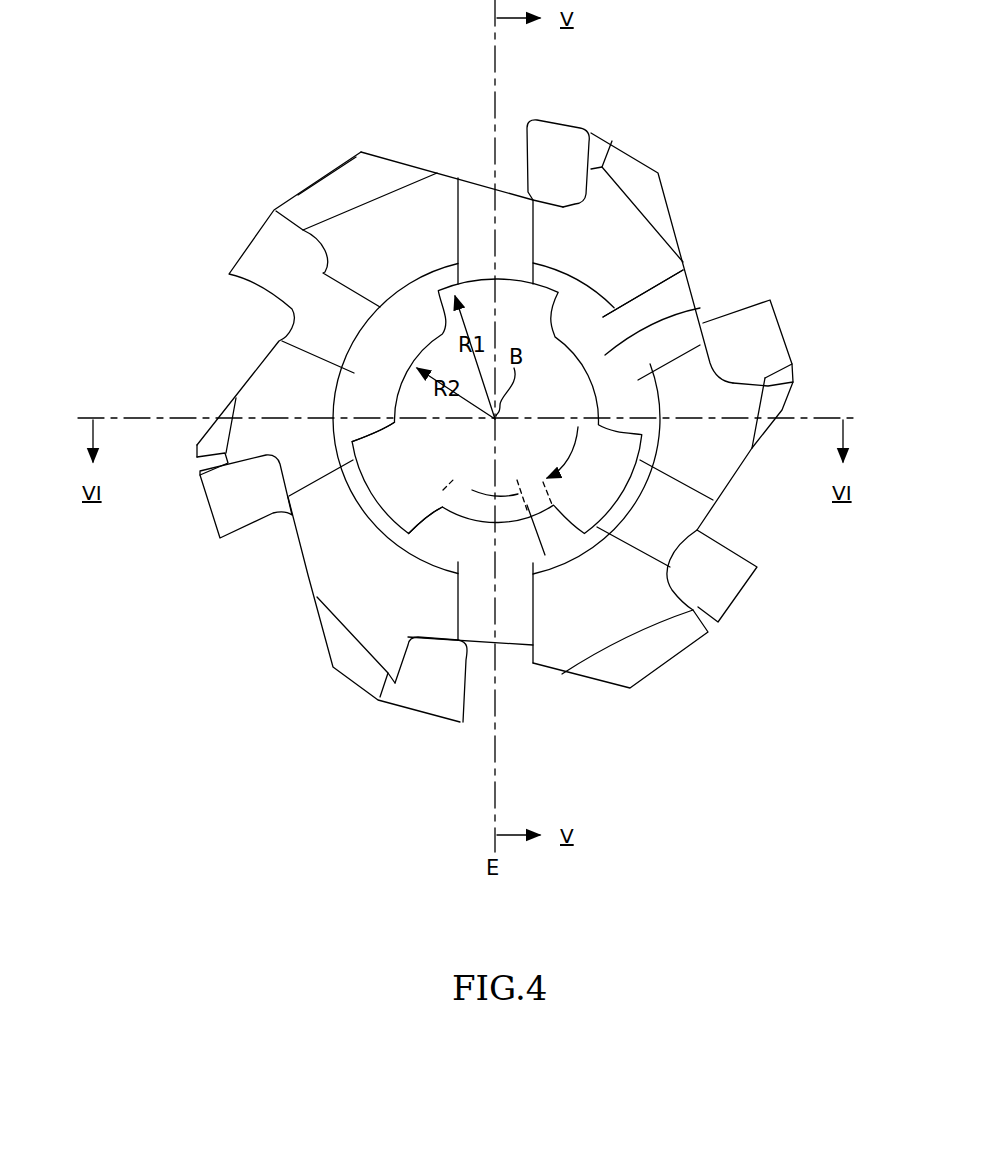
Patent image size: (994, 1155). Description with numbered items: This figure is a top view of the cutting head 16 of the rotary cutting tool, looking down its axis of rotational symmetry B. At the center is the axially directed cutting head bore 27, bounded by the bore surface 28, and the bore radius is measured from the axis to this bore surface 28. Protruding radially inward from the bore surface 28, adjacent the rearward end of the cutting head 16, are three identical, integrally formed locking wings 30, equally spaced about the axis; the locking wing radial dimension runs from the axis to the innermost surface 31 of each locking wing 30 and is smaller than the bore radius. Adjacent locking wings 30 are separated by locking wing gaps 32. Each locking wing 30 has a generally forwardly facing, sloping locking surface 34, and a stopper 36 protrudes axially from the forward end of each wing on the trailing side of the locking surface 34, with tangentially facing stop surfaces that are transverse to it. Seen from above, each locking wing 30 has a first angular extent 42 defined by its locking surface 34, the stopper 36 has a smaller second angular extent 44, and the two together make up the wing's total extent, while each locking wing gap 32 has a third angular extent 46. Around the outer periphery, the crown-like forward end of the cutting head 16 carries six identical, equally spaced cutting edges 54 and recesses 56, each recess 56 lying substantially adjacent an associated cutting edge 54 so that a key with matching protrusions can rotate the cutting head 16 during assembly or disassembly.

The cutting head 16 is at (680, 123).
The cutting head bore 27 is at (440, 498).
The bore surface 28 is at (483, 279).
The locking wing 30 is at (368, 383).
The innermost surface 31 is at (399, 382).
The locking wing gap 32 is at (622, 478).
The locking surface 34 is at (710, 309).
The stopper 36 is at (570, 305).
The first angular extent 42 is at (466, 490).
The second angular extent 44 is at (508, 497).
The third angular extent 46 is at (572, 432).
The cutting edge 54 is at (592, 146).
The recess 56 is at (509, 186).